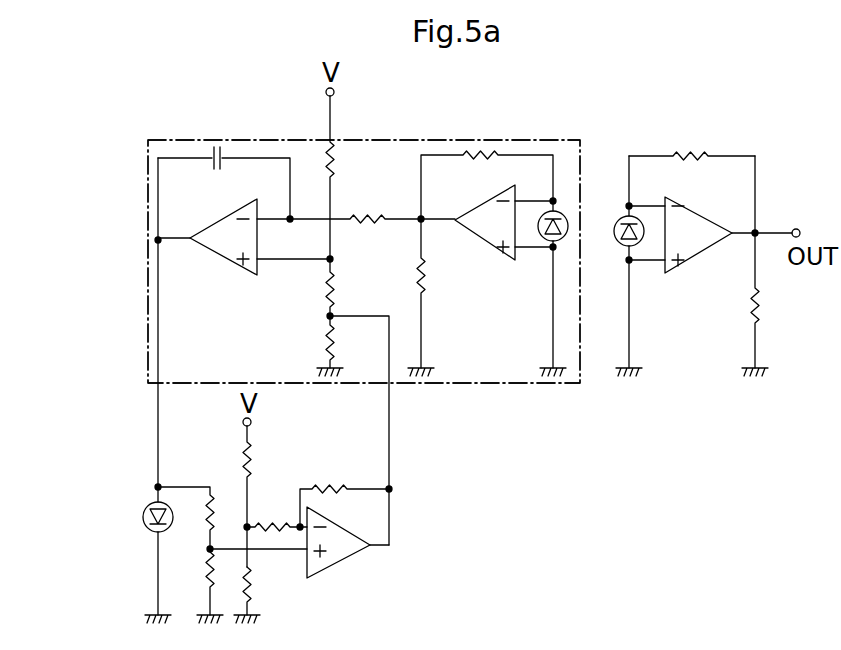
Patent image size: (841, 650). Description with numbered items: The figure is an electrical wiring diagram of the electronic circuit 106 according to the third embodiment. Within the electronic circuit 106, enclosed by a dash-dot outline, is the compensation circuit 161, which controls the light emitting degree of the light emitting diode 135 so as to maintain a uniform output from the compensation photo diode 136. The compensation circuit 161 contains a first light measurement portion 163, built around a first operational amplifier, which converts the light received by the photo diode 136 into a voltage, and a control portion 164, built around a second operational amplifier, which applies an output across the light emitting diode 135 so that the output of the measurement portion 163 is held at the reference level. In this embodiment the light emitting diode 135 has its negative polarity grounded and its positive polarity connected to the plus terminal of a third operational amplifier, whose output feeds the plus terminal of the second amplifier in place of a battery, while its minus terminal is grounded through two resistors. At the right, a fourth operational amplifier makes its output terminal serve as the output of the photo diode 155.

The compensation circuit 161 is at (165, 140).
The electronic circuit 106 is at (555, 137).
The control portion 164 is at (248, 157).
The first light measurement portion 163 is at (507, 146).
The compensation photo diode 136 is at (563, 250).
The photo diode 155 is at (613, 240).
The light emitting diode 135 is at (143, 517).